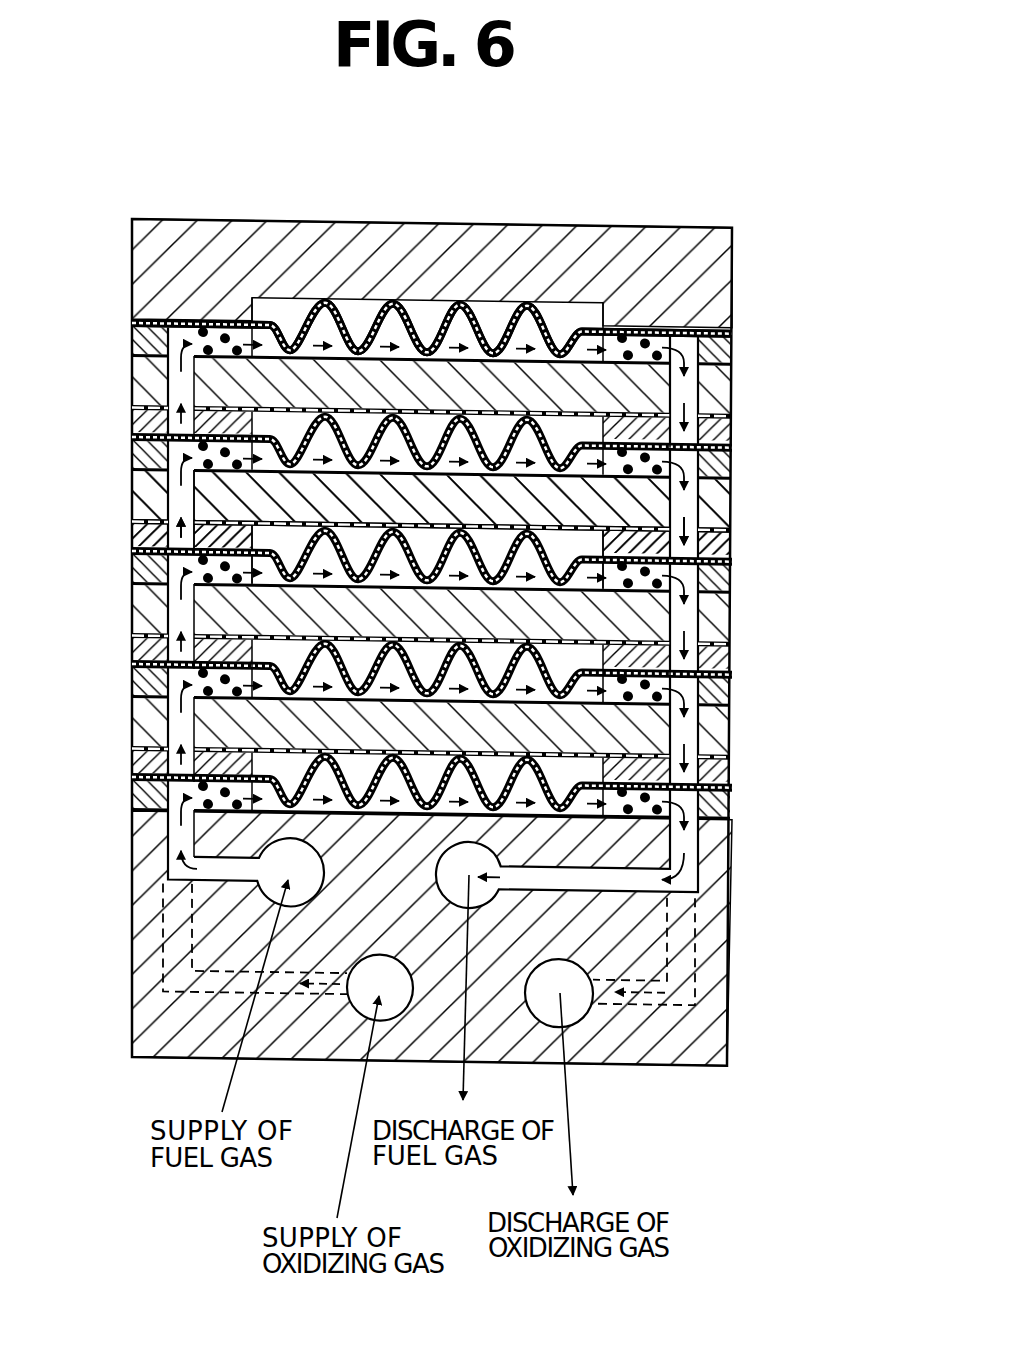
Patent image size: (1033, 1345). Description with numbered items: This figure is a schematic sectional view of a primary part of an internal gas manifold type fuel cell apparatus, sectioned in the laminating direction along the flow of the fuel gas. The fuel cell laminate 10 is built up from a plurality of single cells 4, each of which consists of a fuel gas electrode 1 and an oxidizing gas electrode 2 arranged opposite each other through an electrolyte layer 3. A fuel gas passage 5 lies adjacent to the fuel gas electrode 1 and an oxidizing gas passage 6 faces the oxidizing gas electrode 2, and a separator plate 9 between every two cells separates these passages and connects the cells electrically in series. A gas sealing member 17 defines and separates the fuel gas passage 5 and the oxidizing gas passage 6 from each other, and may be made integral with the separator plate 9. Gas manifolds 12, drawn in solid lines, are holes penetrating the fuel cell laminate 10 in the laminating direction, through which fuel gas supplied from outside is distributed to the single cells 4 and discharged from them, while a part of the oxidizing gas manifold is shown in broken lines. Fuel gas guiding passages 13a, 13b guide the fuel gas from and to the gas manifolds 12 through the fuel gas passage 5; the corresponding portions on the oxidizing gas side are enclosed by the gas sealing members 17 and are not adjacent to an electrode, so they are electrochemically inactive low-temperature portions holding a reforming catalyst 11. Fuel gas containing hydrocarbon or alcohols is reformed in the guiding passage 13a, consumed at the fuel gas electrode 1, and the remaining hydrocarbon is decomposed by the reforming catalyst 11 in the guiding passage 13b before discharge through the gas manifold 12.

The fuel gas electrode 1 is at (570, 300).
The oxidizing gas electrode 2 is at (577, 423).
The electrolyte layer 3 is at (647, 390).
The single cell 4 is at (787, 180).
The fuel gas passage 5 is at (485, 300).
The oxidizing gas passage 6 is at (617, 493).
The separator plate 9 is at (195, 548).
The fuel cell laminate 10 is at (197, 220).
The reforming catalyst 11 is at (200, 337).
The gas manifold 12 is at (178, 815).
The fuel gas guiding passage 13a is at (210, 696).
The fuel gas guiding passage 13b is at (660, 575).
The gas sealing member 17 is at (205, 538).